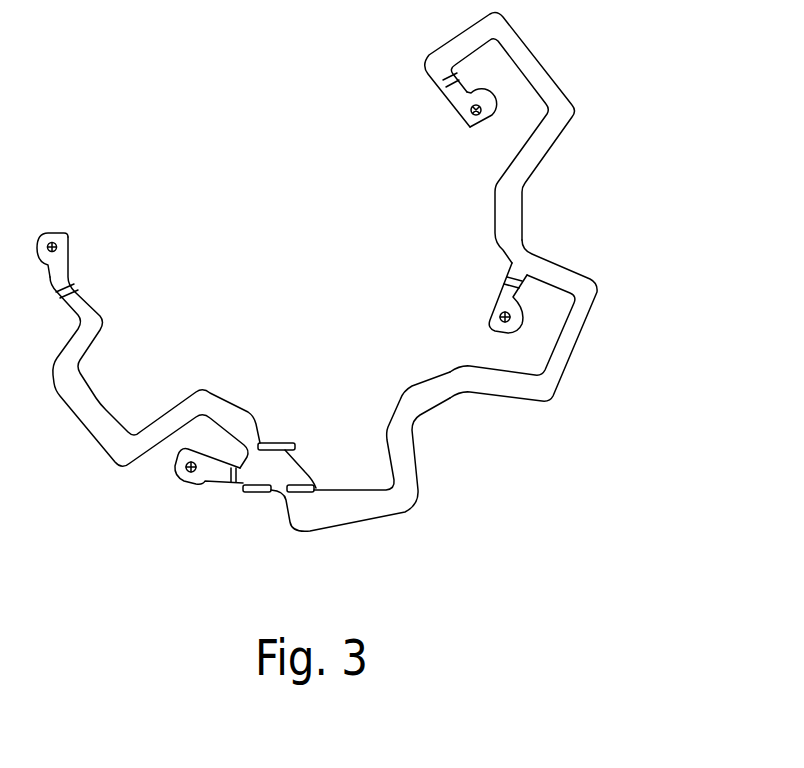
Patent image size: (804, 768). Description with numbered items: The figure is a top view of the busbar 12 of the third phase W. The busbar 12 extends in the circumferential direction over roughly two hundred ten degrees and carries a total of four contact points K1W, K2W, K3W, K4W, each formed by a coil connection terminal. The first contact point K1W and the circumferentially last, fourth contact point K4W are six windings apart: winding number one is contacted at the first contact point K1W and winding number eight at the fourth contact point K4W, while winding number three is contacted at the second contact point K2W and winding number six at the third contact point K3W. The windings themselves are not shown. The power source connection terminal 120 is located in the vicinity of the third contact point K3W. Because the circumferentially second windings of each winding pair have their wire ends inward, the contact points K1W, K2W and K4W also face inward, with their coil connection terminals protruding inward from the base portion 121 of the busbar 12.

The busbar 12 is at (407, 457).
The power source connection terminal 120 is at (258, 492).
The base portion 121 is at (575, 348).
The first contact point K1W is at (457, 107).
The second contact point K2W is at (497, 297).
The third contact point K3W is at (187, 482).
The fourth contact point K4W is at (70, 257).